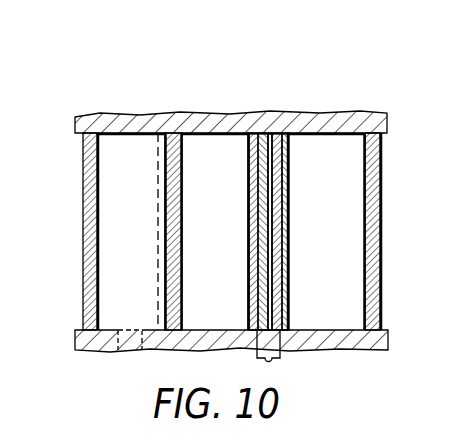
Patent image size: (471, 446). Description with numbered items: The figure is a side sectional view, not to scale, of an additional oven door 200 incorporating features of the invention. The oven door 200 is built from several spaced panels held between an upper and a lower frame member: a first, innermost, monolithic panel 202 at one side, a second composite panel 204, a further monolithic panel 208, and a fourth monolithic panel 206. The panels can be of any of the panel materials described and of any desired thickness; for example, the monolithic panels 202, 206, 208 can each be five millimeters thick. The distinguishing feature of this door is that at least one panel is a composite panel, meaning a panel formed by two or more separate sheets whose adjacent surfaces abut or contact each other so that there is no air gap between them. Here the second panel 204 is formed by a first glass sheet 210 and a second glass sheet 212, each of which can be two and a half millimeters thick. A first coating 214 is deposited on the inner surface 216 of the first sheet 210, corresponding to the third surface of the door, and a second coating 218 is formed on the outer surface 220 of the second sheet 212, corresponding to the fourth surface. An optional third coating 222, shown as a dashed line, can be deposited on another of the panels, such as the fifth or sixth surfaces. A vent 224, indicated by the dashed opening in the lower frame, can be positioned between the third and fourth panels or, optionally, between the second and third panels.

The oven door 200 is at (211, 191).
The first panel 202 is at (383, 204).
The second composite panel 204 is at (270, 358).
The fourth panel 206 is at (177, 260).
The monolithic panel 208 is at (84, 256).
The first glass sheet 210 is at (278, 200).
The second glass sheet 212 is at (262, 131).
The first coating 214 is at (288, 249).
The inner surface 216 is at (290, 205).
The second coating 218 is at (246, 322).
The outer surface 220 is at (250, 181).
The third coating 222 is at (158, 210).
The vent 224 is at (122, 345).